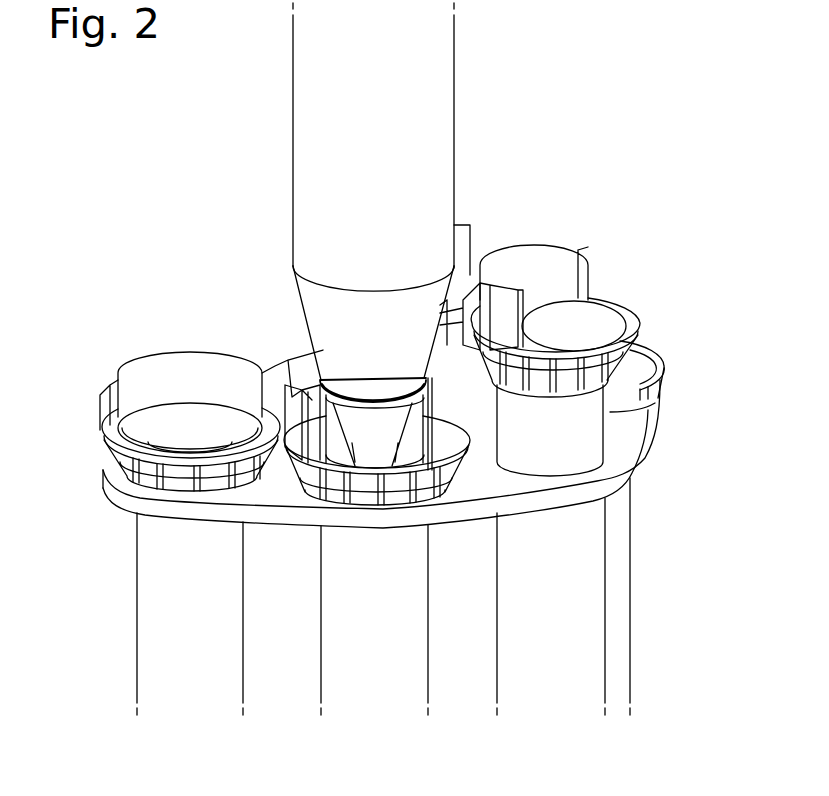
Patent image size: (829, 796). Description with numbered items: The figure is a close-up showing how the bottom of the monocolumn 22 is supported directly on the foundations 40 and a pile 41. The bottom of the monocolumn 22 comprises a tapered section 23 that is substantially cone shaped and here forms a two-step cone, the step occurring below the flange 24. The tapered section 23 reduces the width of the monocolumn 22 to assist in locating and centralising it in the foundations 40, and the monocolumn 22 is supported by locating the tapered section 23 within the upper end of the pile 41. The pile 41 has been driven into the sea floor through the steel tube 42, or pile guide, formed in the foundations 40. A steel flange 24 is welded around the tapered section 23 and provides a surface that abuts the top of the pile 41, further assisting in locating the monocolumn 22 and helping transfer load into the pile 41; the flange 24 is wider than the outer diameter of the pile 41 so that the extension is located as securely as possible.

The monocolumn 22 is at (438, 66).
The tapered section 23 is at (425, 296).
The flange 24 is at (322, 387).
The foundations 40 is at (648, 442).
The pile 41 is at (318, 387).
The steel tube 42 is at (362, 635).